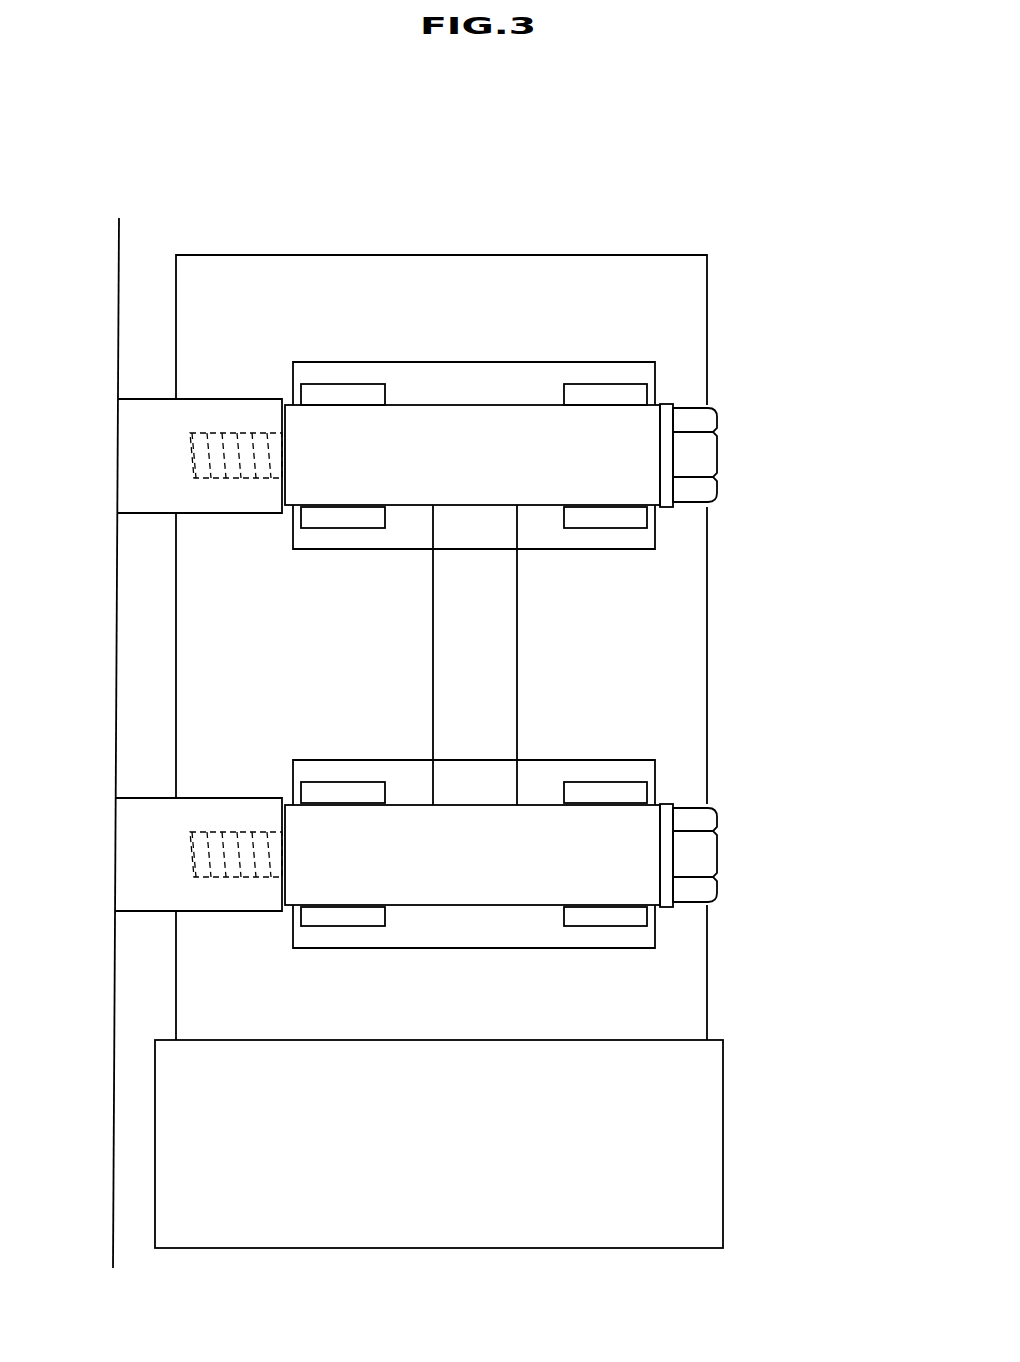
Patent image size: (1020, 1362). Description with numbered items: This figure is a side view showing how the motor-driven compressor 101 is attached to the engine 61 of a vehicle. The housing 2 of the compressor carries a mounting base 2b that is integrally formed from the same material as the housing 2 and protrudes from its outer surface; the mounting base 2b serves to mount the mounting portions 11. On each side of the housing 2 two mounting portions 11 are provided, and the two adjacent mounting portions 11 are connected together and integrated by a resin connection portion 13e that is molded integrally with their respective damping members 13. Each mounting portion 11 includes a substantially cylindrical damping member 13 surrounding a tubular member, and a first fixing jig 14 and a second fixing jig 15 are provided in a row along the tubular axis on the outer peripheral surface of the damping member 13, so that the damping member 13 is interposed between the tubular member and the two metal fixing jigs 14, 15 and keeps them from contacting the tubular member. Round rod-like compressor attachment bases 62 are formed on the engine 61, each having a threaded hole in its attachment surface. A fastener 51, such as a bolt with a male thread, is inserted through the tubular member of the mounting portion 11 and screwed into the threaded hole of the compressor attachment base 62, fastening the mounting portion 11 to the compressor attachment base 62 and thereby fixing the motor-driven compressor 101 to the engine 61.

The motor-driven compressor 101 is at (733, 223).
The housing 2 is at (690, 316).
The mounting base 2b is at (343, 550).
The mounting portion 11 is at (690, 397).
The damping member 13 is at (482, 400).
The connection portion 13e is at (518, 651).
The first fixing jig 14 is at (610, 383).
The second fixing jig 15 is at (345, 383).
The fastener 51 is at (718, 452).
The engine 61 is at (119, 259).
The compressor attachment base 62 is at (148, 514).